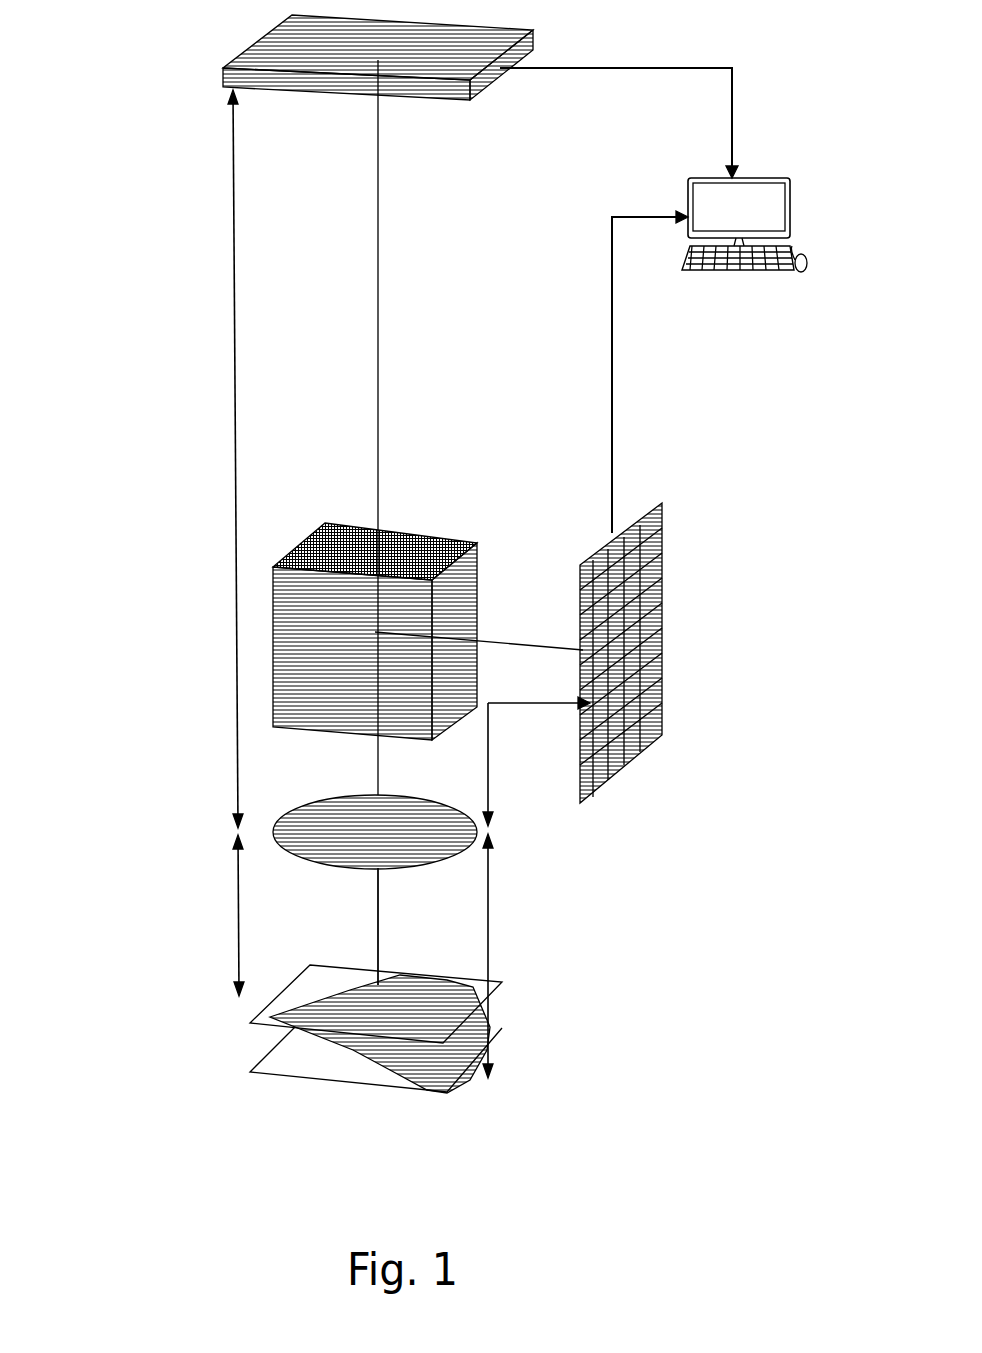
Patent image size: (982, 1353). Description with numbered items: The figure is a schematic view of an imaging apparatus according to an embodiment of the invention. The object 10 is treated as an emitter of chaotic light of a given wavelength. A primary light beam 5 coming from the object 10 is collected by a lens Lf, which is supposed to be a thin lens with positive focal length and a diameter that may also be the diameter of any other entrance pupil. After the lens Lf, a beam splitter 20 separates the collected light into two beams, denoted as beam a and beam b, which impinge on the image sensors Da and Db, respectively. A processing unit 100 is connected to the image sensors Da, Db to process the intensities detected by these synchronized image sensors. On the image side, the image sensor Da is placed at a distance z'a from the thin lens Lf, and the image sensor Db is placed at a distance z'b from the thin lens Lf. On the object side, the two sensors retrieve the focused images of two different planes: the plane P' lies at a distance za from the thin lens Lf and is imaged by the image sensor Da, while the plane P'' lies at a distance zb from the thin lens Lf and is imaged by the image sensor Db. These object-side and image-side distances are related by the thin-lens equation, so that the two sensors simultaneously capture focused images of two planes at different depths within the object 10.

The image sensor Da is at (257, 65).
The beam a is at (378, 352).
The beam splitter 20 is at (425, 553).
The beam b is at (530, 646).
The image sensor Db is at (637, 718).
The processing unit 100 is at (750, 256).
The distance z'a is at (209, 459).
The distance za is at (239, 955).
The lens Lf is at (355, 833).
The primary light beam 5 is at (378, 900).
The distance z'b is at (536, 761).
The distance zb is at (490, 900).
The plane P' is at (306, 1004).
The plane P'' is at (331, 1101).
The object 10 is at (428, 1067).